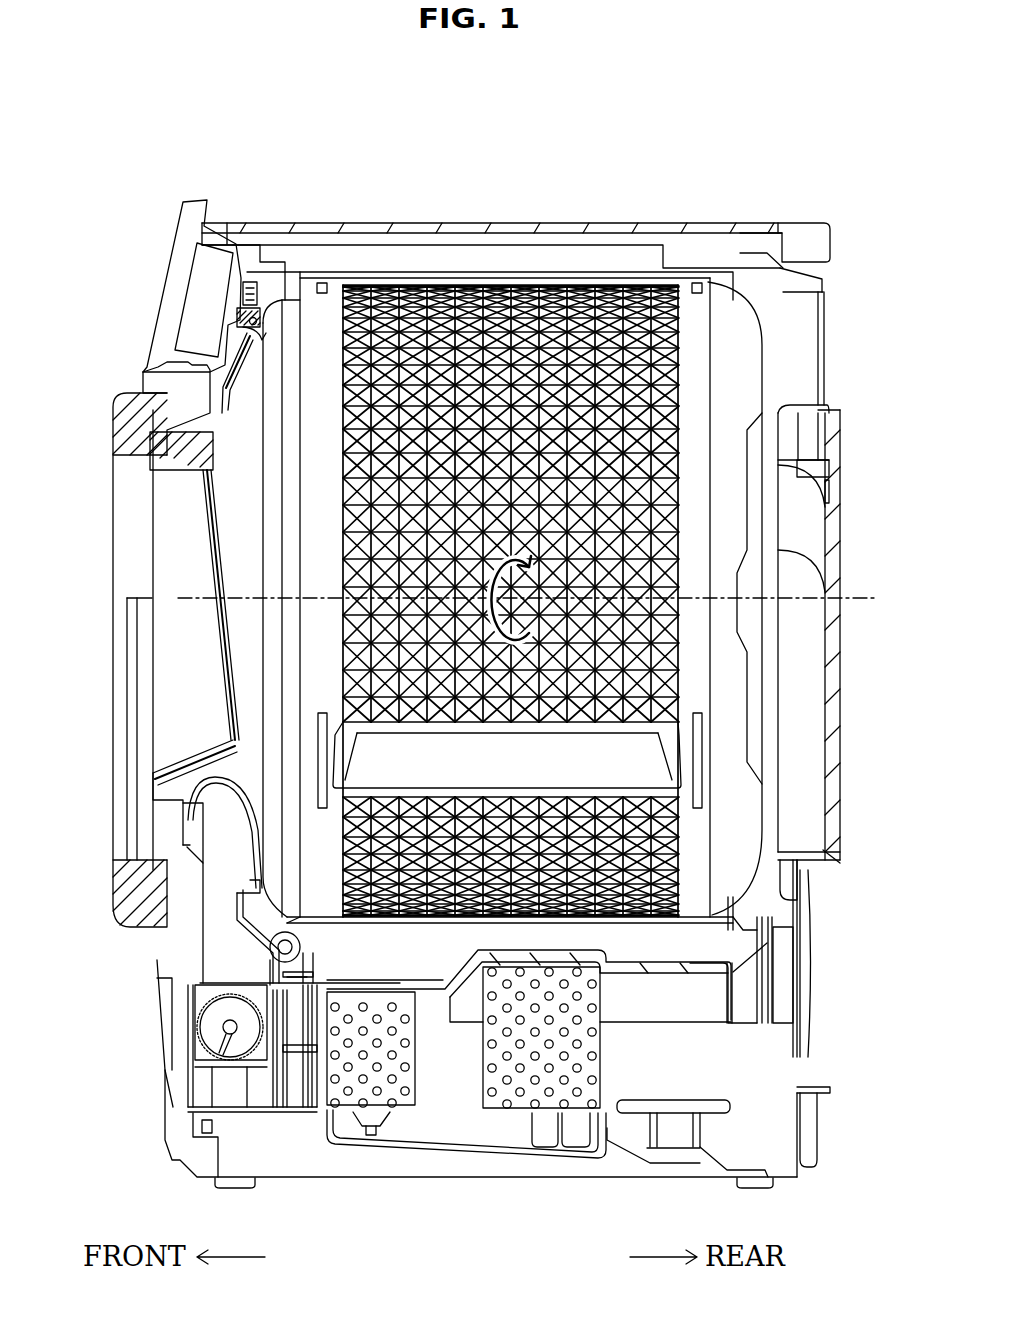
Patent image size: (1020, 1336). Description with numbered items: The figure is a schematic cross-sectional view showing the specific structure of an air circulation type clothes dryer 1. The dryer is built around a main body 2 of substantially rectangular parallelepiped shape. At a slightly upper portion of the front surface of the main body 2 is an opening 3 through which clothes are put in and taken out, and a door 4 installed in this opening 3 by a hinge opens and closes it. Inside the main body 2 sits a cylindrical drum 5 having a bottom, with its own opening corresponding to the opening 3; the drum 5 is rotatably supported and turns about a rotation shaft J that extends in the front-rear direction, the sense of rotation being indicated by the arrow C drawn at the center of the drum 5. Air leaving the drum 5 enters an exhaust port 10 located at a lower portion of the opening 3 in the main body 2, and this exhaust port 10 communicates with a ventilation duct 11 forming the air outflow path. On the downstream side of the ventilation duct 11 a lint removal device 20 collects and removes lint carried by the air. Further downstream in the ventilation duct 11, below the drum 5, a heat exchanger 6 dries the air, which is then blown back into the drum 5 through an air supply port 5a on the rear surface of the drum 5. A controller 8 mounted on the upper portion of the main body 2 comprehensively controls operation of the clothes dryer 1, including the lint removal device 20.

The clothes dryer 1 is at (252, 184).
The main body 2 is at (607, 232).
The opening 3 is at (247, 523).
The door 4 is at (130, 569).
The drum 5 is at (611, 600).
The air supply port 5a is at (808, 683).
The heat exchanger 6 is at (608, 1190).
The controller 8 is at (205, 290).
The exhaust port 10 is at (207, 830).
The ventilation duct 11 is at (225, 934).
The lint removal device 20 is at (133, 1015).
The rotation shaft J is at (872, 598).
The drum rotation direction C is at (511, 598).